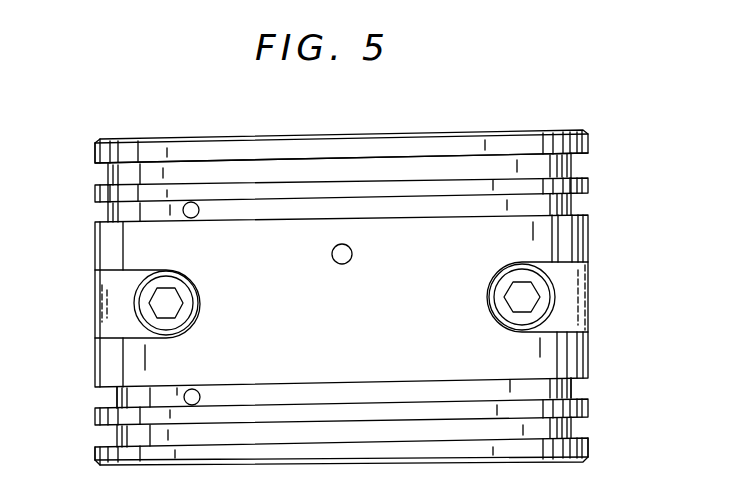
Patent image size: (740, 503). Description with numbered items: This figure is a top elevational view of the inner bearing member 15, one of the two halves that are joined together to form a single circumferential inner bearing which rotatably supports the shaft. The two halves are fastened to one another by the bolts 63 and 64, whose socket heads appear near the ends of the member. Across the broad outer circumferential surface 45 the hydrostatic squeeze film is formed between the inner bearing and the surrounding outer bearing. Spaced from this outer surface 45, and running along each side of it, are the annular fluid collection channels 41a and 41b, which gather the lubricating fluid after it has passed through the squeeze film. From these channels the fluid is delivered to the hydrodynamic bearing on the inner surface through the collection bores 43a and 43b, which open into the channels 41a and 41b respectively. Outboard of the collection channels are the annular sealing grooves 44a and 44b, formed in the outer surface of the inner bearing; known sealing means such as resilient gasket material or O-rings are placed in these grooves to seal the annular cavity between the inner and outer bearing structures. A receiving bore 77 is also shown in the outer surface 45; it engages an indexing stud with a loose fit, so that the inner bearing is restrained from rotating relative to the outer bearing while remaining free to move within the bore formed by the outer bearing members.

The lower half of inner bearing 15 is at (420, 133).
The annular fluid collection channel 41a is at (117, 398).
The annular fluid collection channel 41b is at (571, 204).
The collection bore 43a is at (192, 389).
The collection bore 43b is at (190, 202).
The annular sealing groove 44a is at (115, 437).
The annular sealing groove 44b is at (571, 165).
The outer circumferential surface 45 is at (344, 325).
The bolt 63 is at (150, 302).
The bolt 64 is at (547, 297).
The receiving bore 77 is at (332, 254).